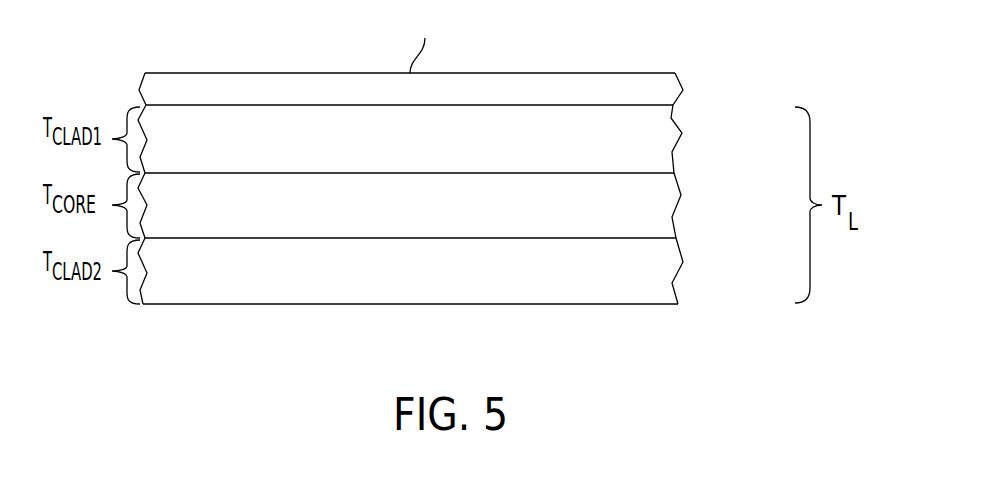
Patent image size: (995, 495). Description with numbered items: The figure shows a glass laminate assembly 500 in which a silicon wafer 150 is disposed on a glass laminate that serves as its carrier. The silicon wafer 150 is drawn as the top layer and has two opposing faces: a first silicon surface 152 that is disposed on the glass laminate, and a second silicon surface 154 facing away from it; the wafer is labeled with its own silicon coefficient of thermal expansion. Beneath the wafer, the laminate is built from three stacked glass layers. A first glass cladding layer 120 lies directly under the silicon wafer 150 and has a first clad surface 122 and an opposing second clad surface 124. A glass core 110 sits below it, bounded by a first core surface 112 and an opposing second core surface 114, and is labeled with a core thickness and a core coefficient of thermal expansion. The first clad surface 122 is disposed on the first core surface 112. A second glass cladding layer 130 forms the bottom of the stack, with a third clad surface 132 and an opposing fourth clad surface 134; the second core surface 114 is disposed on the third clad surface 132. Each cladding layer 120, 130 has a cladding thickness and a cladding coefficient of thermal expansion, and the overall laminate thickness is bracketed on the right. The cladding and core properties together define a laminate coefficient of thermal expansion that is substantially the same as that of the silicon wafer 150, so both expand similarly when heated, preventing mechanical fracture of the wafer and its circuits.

The glass laminate assembly 500 is at (496, 158).
The silicon wafer 150 is at (417, 58).
The first silicon surface 152 is at (197, 105).
The second silicon surface 154 is at (286, 73).
The first glass cladding layer 120 is at (443, 139).
The first clad surface 122 is at (250, 173).
The second clad surface 124 is at (557, 107).
The glass core 110 is at (441, 205).
The first core surface 112 is at (575, 173).
The second core surface 114 is at (190, 238).
The second glass cladding layer 130 is at (442, 271).
The third clad surface 132 is at (625, 238).
The fourth clad surface 134 is at (250, 304).